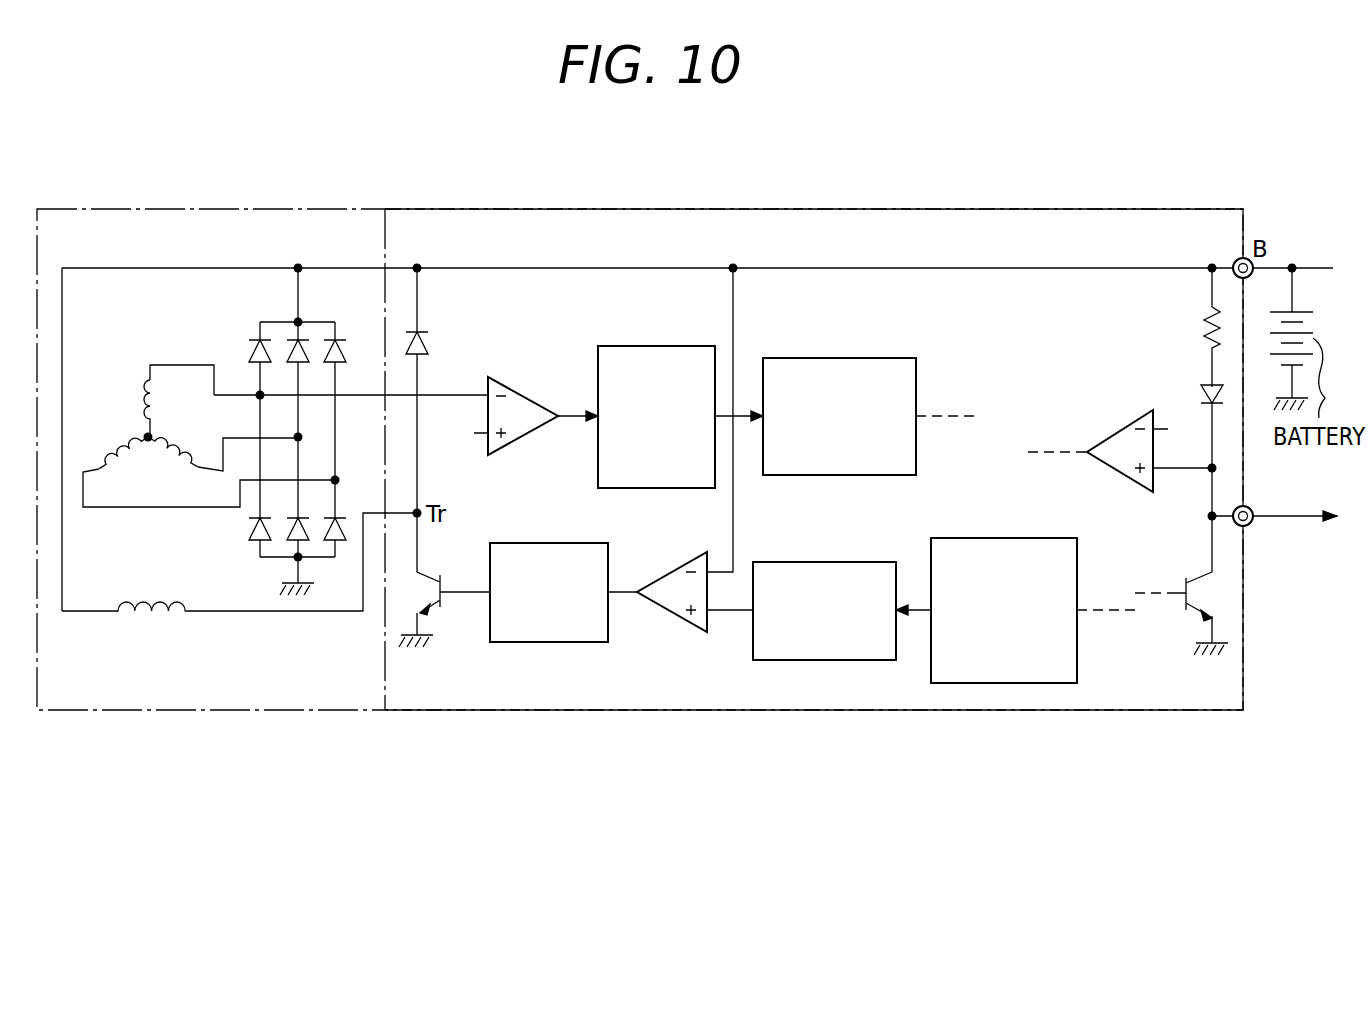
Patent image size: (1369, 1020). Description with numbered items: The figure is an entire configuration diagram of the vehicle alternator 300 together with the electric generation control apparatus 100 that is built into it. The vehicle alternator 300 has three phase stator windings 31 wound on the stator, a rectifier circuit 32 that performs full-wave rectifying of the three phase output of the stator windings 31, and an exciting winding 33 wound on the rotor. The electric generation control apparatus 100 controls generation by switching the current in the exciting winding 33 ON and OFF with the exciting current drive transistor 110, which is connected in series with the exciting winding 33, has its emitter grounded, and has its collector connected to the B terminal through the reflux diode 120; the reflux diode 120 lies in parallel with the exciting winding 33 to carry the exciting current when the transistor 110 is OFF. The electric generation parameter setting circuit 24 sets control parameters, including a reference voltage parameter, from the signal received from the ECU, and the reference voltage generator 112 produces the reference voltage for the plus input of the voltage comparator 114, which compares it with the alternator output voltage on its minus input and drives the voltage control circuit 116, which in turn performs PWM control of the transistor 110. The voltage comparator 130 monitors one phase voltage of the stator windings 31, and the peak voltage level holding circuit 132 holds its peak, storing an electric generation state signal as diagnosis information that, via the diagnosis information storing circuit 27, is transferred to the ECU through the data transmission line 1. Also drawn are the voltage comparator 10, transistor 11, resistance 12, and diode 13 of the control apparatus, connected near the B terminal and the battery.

The vehicle alternator 300 is at (135, 205).
The electric generation control apparatus 100 is at (1032, 210).
The three phase stator windings 31 is at (141, 428).
The rectifier circuit 32 is at (277, 322).
The exciting winding 33 is at (160, 600).
The reflux diode 120 is at (425, 332).
The voltage comparator 130 is at (519, 385).
The peak voltage level holding circuit 132 is at (670, 346).
The diagnosis information storing circuit 27 is at (904, 358).
The voltage control circuit 116 is at (548, 543).
The exciting current drive transistor 110 is at (423, 572).
The voltage comparator 114 is at (678, 560).
The reference voltage generator 112 is at (875, 562).
The electric generation parameter setting circuit 24 is at (1065, 538).
The voltage comparator 10 is at (1115, 428).
The transistor 11 is at (1196, 572).
The resistance 12 is at (1205, 320).
The diode 13 is at (1205, 386).
The data transmission line 1 is at (1300, 518).